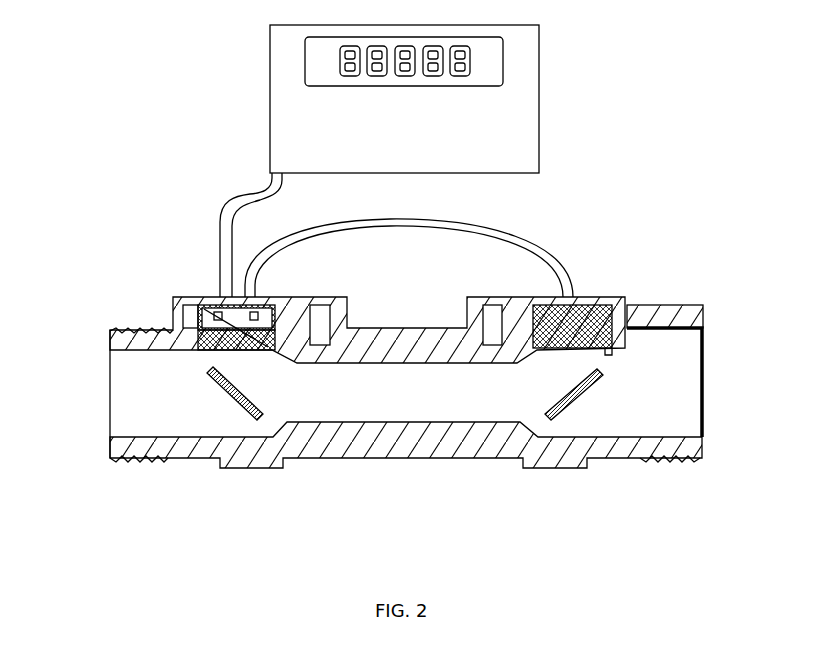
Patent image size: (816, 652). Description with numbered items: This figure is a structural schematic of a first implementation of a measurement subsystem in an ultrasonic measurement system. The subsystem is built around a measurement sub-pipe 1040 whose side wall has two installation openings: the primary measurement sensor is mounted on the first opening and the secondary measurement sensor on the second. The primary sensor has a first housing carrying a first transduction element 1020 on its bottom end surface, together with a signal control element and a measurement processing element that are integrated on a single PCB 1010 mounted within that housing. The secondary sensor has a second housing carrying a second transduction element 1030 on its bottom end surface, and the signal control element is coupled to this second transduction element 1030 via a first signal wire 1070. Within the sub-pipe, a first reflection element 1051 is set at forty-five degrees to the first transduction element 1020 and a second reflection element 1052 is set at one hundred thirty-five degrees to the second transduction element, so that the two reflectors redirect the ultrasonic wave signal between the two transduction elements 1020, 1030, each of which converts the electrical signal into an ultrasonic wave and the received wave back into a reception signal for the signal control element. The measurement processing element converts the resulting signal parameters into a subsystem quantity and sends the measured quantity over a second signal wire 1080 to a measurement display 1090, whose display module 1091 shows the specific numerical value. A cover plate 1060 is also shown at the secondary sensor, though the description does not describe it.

The PCB 1010 is at (237, 320).
The first transduction element 1020 is at (207, 336).
The second transduction element 1030 is at (565, 347).
The measurement sub-pipe 1040 is at (170, 447).
The first reflection element 1051 is at (238, 400).
The second reflection element 1052 is at (575, 405).
The cover plate 1060 is at (627, 304).
The first signal wire 1070 is at (530, 243).
The second signal wire 1080 is at (233, 213).
The measurement display 1090 is at (333, 160).
The display module 1091 is at (490, 62).